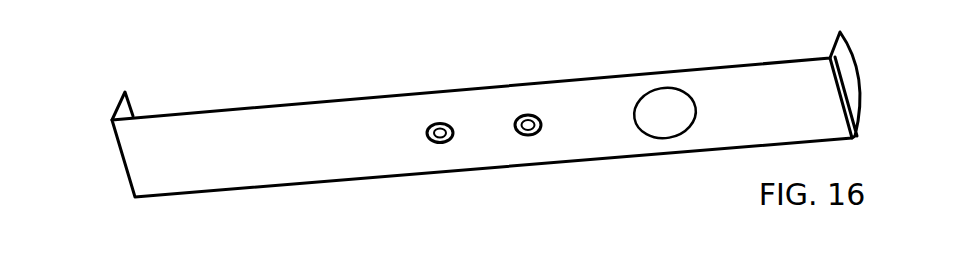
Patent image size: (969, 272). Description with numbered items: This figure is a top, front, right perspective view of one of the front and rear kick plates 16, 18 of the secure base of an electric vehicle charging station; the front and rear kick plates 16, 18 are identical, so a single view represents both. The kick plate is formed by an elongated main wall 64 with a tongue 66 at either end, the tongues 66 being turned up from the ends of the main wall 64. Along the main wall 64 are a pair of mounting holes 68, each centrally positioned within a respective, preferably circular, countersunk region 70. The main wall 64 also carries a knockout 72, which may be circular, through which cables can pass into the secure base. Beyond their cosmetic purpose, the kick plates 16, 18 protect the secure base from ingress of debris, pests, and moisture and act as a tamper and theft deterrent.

The front kick plate 16 is at (482, 143).
The rear kick plate 18 is at (482, 151).
The main wall 64 is at (280, 140).
The tongues 66 is at (124, 95).
The mounting holes 68 is at (448, 129).
The countersunk regions 70 is at (430, 140).
The knockout 72 is at (665, 115).